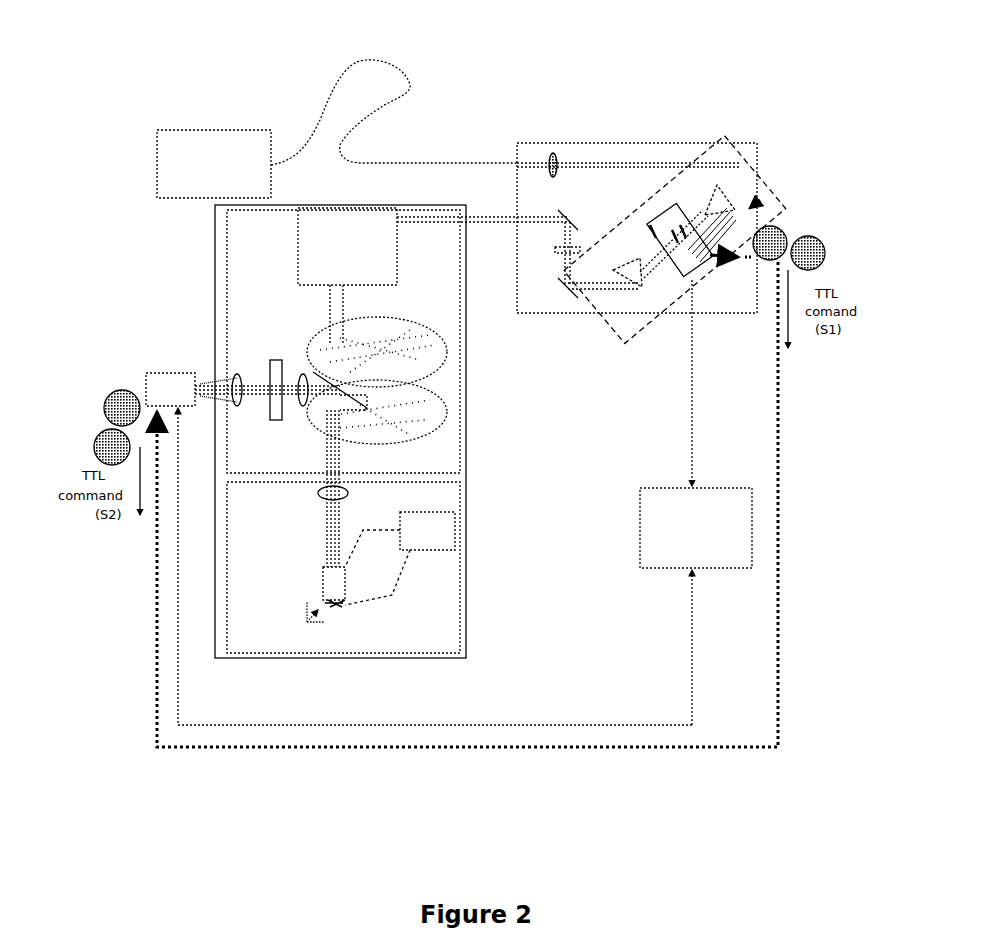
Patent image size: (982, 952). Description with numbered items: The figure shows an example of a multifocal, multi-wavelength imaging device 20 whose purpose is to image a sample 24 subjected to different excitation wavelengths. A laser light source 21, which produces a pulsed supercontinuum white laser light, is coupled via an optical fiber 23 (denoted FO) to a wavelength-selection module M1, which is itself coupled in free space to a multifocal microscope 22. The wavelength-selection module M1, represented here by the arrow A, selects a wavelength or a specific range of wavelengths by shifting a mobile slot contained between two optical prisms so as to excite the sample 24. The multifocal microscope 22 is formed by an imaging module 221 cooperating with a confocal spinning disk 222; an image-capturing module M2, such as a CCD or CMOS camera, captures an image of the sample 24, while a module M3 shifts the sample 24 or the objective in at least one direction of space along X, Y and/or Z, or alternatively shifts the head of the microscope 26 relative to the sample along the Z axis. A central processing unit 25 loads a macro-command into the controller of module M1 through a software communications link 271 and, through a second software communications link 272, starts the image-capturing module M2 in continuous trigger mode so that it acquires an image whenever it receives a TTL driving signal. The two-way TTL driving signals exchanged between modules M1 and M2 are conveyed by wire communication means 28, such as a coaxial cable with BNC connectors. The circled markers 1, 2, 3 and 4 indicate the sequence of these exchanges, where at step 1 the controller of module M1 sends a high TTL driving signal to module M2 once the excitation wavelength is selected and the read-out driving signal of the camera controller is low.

The imaging device 20 is at (712, 72).
The laser light source 21 is at (182, 142).
The multifocal microscope 22 is at (215, 290).
The confocal spinning disk 222 is at (460, 405).
The imaging module 221 is at (460, 625).
The optical fiber 23 is at (405, 98).
The sample 24 is at (345, 603).
The central processing unit 25 is at (660, 558).
The head of the microscope 26 is at (322, 578).
The software communications link 271 is at (698, 450).
The software communications link 272 is at (698, 680).
The wire communication means 28 is at (778, 585).
The wavelength-selection module M1 is at (755, 160).
The image-capturing module M2 is at (146, 376).
The module for shifting the sample M3 is at (446, 532).
The arrow A is at (748, 205).
The step 1 is at (808, 253).
The signal 2 is at (122, 408).
The signal 3 is at (112, 447).
The signal 4 is at (770, 243).